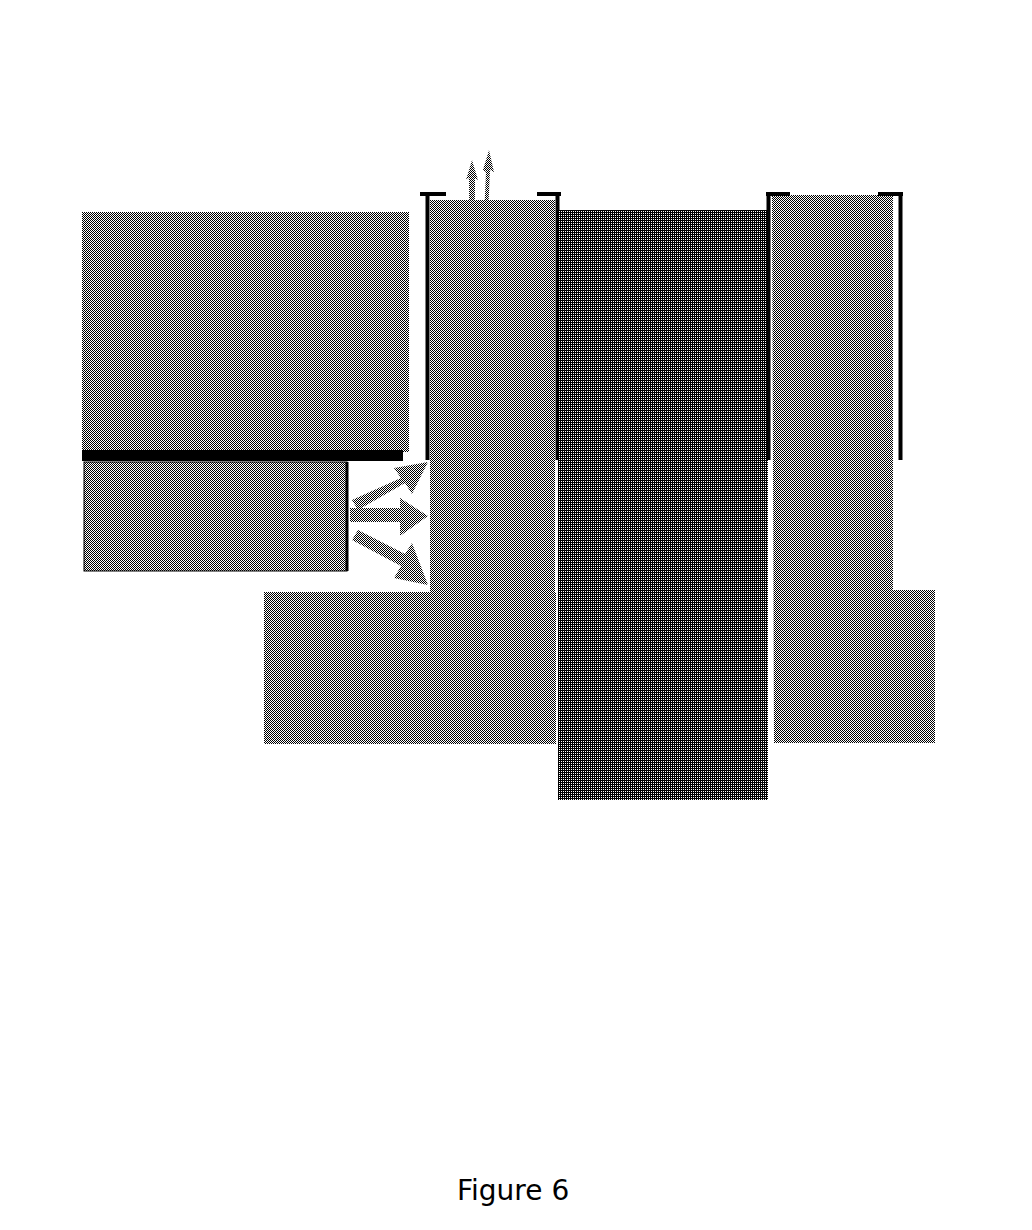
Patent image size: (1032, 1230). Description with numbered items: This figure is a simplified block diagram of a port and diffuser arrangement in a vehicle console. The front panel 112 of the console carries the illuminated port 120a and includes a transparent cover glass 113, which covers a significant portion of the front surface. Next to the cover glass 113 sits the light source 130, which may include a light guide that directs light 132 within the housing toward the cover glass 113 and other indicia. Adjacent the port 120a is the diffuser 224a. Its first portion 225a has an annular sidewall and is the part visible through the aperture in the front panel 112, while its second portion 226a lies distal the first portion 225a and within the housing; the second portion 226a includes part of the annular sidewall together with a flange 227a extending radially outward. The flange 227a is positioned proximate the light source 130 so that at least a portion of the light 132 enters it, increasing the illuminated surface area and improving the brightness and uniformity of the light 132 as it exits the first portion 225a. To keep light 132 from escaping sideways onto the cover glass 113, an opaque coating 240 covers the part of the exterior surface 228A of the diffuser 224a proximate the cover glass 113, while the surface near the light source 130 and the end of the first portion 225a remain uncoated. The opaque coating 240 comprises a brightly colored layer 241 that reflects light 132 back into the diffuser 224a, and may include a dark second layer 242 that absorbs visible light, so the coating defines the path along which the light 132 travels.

The front panel 112 is at (128, 280).
The cover glass 113 is at (153, 238).
The light source 130 is at (150, 538).
The light 132 is at (472, 178).
The illuminated port 120a is at (697, 225).
The diffuser 224a is at (471, 307).
The first portion 225a is at (457, 200).
The second portion 226a is at (492, 565).
The flange 227a is at (310, 720).
The exterior surface 228A is at (553, 250).
The opaque coating 240 is at (553, 195).
The layer 241 is at (430, 195).
The second layer 242 is at (423, 232).